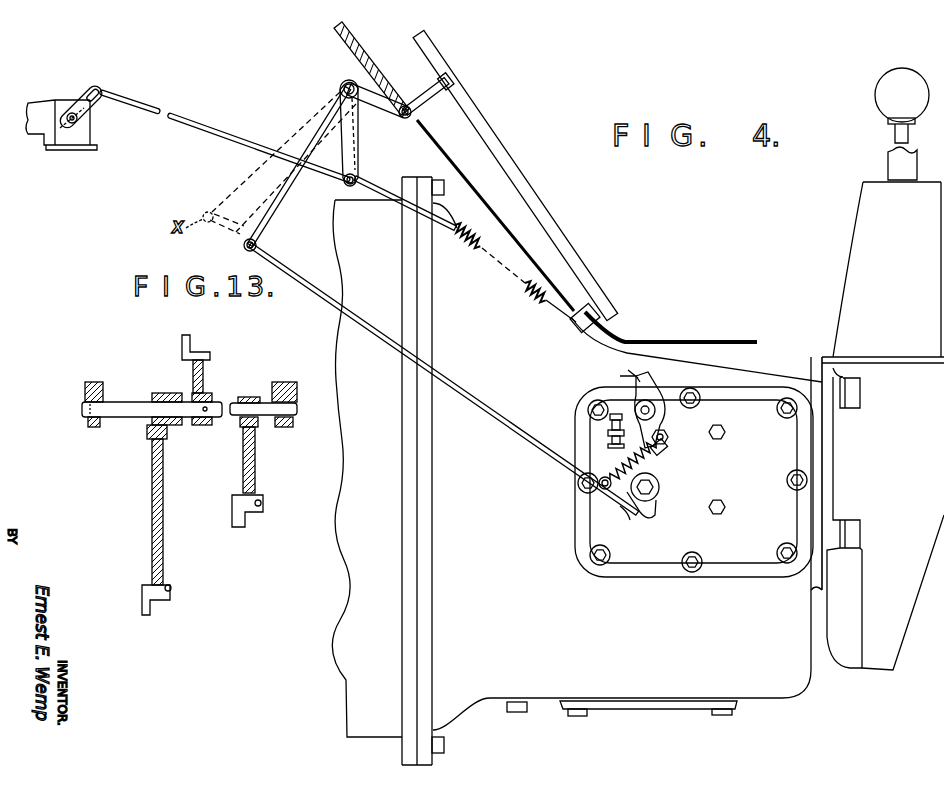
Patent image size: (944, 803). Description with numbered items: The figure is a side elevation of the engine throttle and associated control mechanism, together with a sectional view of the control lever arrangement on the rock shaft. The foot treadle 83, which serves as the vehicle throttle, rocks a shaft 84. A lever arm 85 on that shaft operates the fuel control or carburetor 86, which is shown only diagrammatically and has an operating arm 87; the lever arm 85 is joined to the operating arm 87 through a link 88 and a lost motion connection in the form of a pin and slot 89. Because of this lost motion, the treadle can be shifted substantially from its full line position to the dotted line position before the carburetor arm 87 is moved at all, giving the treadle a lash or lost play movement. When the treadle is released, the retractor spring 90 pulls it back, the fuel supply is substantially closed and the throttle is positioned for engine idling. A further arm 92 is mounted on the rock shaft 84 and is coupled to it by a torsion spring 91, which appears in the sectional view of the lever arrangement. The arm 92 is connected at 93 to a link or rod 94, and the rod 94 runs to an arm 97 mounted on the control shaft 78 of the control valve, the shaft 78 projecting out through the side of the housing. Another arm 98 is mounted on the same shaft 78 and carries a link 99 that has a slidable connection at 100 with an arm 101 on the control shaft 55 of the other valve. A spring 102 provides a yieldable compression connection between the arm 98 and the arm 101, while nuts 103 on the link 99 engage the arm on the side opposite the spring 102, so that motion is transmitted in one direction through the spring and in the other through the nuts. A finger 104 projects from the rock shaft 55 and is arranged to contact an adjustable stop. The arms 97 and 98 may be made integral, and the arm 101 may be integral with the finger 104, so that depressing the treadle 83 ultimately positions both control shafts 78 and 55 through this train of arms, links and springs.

In FIG. 4, the foot treadle 83 is at (470, 110).
In FIG. 4, the rock shaft 84 is at (343, 84).
In FIG. 13, the rock shaft 84 is at (82, 410).
In FIG. 4, the lever arm 85 is at (362, 150).
In FIG. 13, the lever arm 85 is at (255, 456).
In FIG. 4, the carburetor 86 is at (58, 150).
In FIG. 4, the operating arm 87 is at (80, 116).
In FIG. 4, the link 88 is at (249, 140).
In FIG. 13, the link 88 is at (246, 520).
In FIG. 4, the pin and slot 89 is at (104, 85).
In FIG. 4, the retractor spring 90 is at (470, 258).
In FIG. 13, the torsion spring 91 is at (154, 396).
In FIG. 4, the arm 92 is at (277, 206).
In FIG. 13, the arm 92 is at (152, 517).
In FIG. 4, the connection 93 is at (258, 247).
In FIG. 4, the link 94 is at (380, 300).
In FIG. 13, the link 94 is at (142, 602).
In FIG. 4, the control shaft 55 is at (656, 396).
In FIG. 4, the control shaft 78 is at (660, 491).
In FIG. 4, the arm 97 is at (654, 501).
In FIG. 4, the arm 98 is at (626, 512).
In FIG. 4, the link 99 is at (600, 476).
In FIG. 4, the slidable connection 100 is at (662, 455).
In FIG. 4, the arm 101 is at (658, 432).
In FIG. 4, the spring 102 is at (606, 420).
In FIG. 4, the nuts 103 is at (668, 444).
In FIG. 4, the finger 104 is at (633, 374).